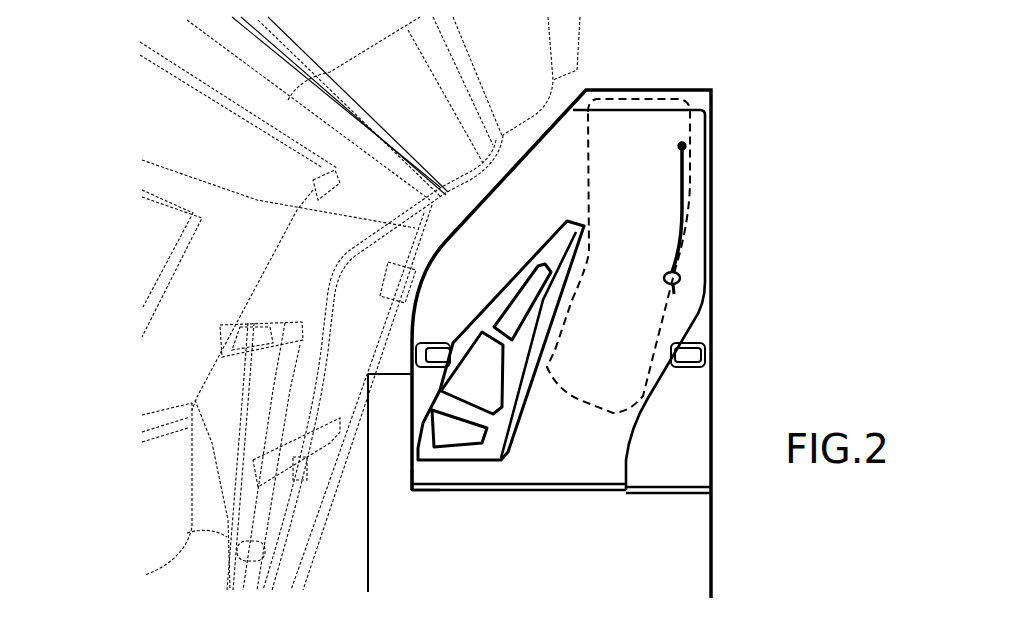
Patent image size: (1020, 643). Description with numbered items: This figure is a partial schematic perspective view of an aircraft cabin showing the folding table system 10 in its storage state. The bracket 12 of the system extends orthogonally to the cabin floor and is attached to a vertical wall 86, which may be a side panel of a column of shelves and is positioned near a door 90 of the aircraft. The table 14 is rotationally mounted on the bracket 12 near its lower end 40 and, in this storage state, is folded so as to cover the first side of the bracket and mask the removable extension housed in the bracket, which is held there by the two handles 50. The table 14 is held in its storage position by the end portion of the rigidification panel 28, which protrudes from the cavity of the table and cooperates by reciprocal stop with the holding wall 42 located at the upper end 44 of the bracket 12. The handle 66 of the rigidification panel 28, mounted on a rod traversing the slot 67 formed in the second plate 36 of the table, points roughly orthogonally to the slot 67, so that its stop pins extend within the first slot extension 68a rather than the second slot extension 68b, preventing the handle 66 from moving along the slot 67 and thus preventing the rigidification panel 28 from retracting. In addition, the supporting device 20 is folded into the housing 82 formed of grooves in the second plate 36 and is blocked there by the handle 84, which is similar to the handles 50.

The folding table system 10 is at (483, 505).
The bracket 12 is at (677, 494).
The table 14 is at (422, 472).
The supporting device 20 is at (523, 262).
The rigidification panel 28 is at (695, 178).
The second plate 36 is at (562, 467).
The lower end 40 is at (668, 490).
The holding wall 42 is at (698, 98).
The upper end 44 is at (677, 88).
The handles 50 is at (699, 354).
The handle 66 is at (680, 274).
The slot 67 is at (687, 219).
The first slot extension 68a is at (674, 285).
The second slot extension 68b is at (686, 146).
The housing 82 is at (527, 362).
The handle 84 is at (427, 342).
The vertical wall 86 is at (577, 531).
The door 90 is at (217, 262).